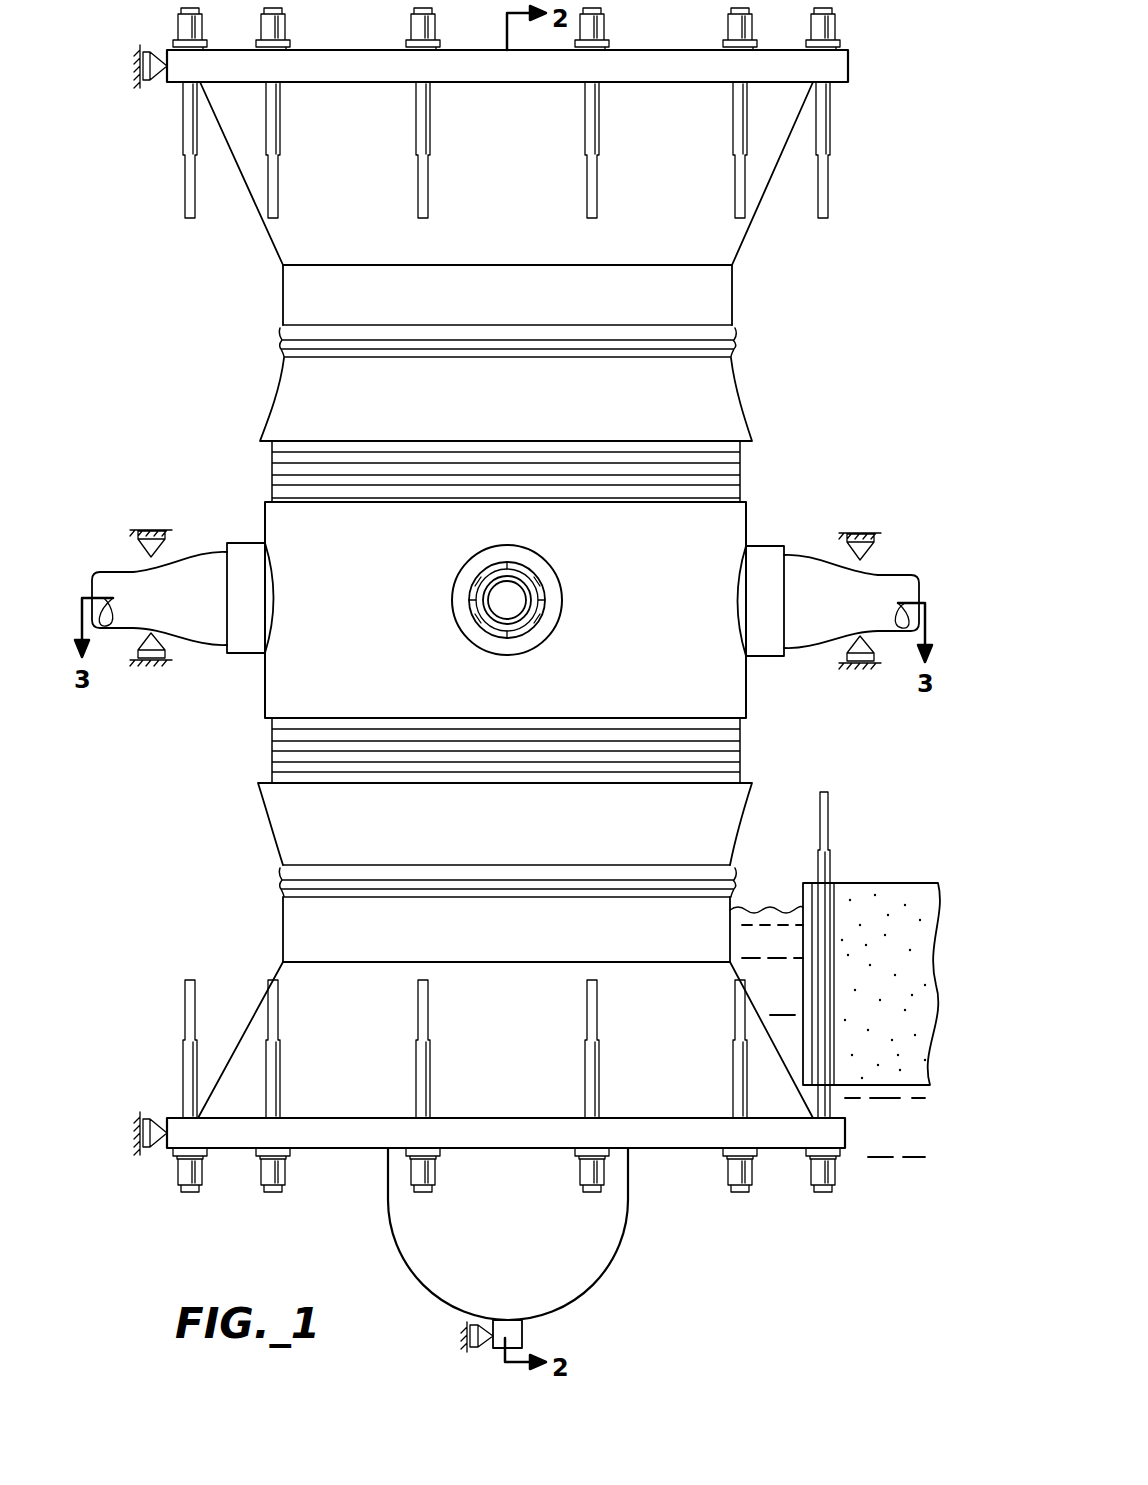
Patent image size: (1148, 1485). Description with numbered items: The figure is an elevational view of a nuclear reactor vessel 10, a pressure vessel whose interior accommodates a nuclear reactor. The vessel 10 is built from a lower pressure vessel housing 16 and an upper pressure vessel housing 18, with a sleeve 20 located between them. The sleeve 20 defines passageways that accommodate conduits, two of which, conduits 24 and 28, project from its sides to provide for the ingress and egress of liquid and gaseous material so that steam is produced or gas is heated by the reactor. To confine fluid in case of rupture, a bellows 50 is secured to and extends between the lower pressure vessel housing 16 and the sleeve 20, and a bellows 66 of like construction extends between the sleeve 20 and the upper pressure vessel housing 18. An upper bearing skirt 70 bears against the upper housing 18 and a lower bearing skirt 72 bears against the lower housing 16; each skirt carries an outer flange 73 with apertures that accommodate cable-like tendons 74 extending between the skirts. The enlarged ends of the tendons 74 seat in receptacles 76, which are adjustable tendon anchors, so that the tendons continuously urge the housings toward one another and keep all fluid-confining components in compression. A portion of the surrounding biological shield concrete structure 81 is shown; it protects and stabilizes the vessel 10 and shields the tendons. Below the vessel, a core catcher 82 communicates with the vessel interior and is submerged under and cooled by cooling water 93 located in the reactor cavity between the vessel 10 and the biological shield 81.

The nuclear reactor vessel 10 is at (784, 378).
The lower pressure vessel housing 16 is at (745, 826).
The upper pressure vessel housing 18 is at (262, 400).
The sleeve 20 is at (716, 546).
The conduit 24 is at (118, 571).
The conduit 28 is at (890, 578).
The bellows 50 is at (272, 760).
The bellows 66 is at (270, 472).
The upper bearing skirt 70 is at (740, 250).
The lower bearing skirt 72 is at (252, 988).
The outer flange 73 is at (850, 62).
The tendon 74 is at (415, 6).
The receptacle 76 is at (203, 36).
The biological shield concrete structure 81 is at (845, 883).
The core catcher 82 is at (615, 1256).
The cooling water 93 is at (742, 910).